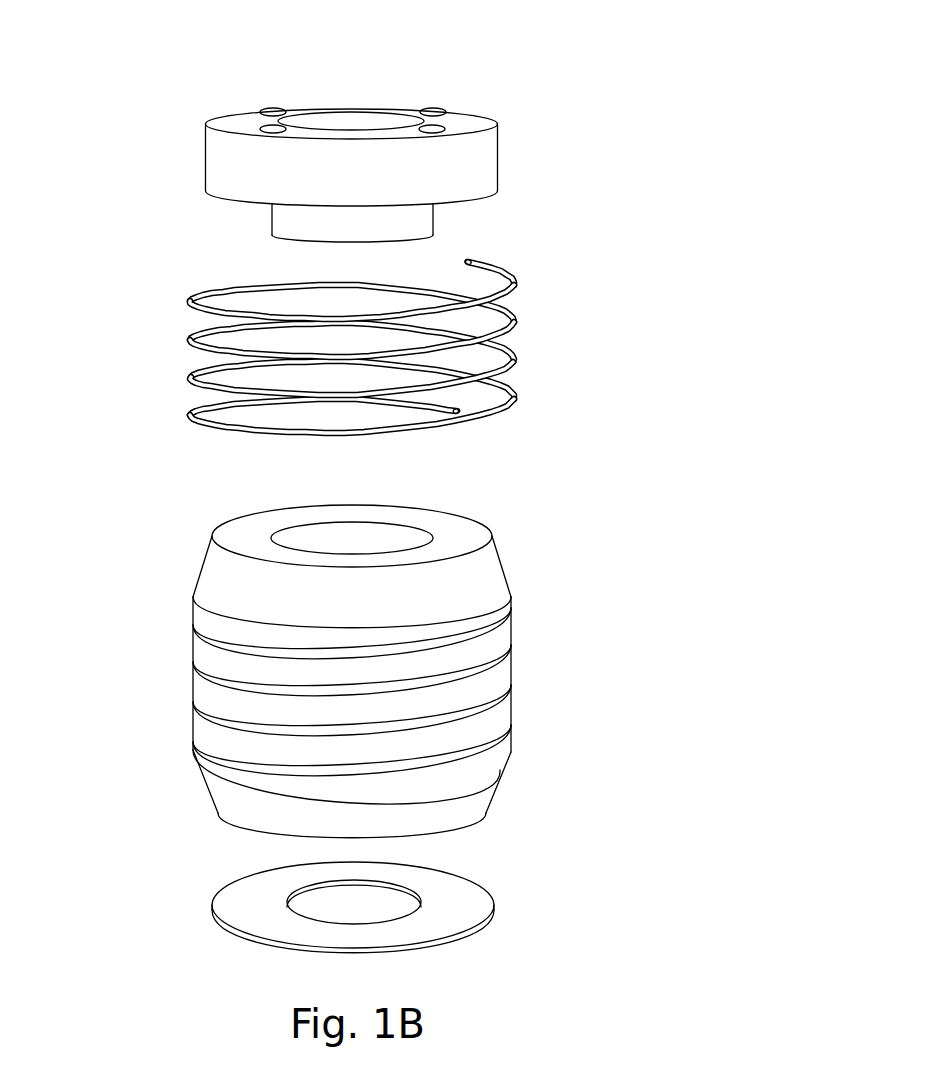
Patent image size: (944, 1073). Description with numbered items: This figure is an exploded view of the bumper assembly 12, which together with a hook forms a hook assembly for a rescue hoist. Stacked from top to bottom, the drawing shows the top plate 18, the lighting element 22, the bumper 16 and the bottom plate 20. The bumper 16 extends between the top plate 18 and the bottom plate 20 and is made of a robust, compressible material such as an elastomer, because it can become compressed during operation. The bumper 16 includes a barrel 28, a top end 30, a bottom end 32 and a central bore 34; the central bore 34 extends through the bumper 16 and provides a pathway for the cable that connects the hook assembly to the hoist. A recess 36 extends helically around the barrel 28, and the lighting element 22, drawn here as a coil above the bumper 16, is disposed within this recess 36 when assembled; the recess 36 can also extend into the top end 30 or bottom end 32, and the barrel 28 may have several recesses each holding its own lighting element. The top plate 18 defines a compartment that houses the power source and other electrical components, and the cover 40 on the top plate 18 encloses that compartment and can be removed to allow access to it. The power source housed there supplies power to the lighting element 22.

The bumper assembly 12 is at (118, 315).
The bumper 16 is at (528, 576).
The top plate 18 is at (512, 158).
The bottom plate 20 is at (504, 894).
The lighting element 22 is at (528, 310).
The barrel 28 is at (510, 663).
The top end 30 is at (502, 562).
The bottom end 32 is at (492, 792).
The central bore 34 is at (333, 526).
The recess 36 is at (195, 665).
The cover 40 is at (465, 120).